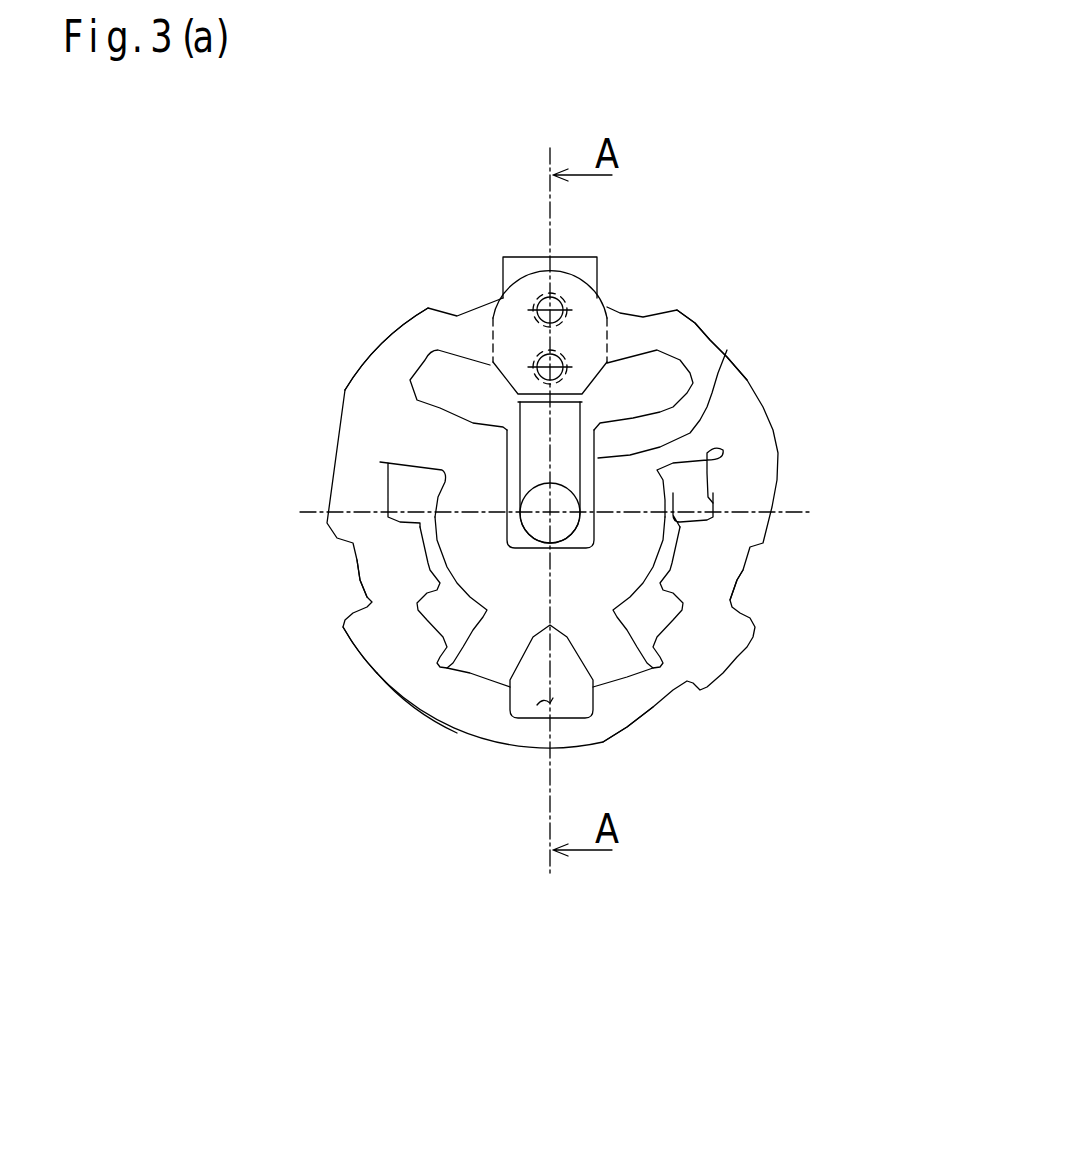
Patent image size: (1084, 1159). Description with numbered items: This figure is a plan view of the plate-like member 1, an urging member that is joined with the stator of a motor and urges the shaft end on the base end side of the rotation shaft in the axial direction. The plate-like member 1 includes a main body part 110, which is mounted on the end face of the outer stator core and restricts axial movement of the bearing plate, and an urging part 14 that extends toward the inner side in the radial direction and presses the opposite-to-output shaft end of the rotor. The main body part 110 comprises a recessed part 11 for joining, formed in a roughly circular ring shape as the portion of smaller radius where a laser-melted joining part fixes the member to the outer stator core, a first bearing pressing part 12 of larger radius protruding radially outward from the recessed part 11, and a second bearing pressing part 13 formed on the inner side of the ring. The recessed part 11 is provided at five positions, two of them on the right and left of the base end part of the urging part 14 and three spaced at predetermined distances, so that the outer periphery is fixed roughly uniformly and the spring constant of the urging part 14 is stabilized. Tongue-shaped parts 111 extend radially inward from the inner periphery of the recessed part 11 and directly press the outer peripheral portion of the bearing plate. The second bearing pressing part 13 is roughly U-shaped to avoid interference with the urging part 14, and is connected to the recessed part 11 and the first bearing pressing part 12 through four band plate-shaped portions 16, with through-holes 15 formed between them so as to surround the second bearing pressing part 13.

The plate-like member 1 is at (766, 866).
The recessed part for joining 11 is at (477, 307).
The first bearing pressing part 12 is at (367, 377).
The second bearing pressing part 13 is at (388, 482).
The urging part 14 is at (687, 455).
The through-hole 15 is at (423, 465).
The band plate-shaped portion 16 is at (427, 433).
The main body part 110 is at (467, 683).
The tongue-shaped part 111 is at (680, 495).